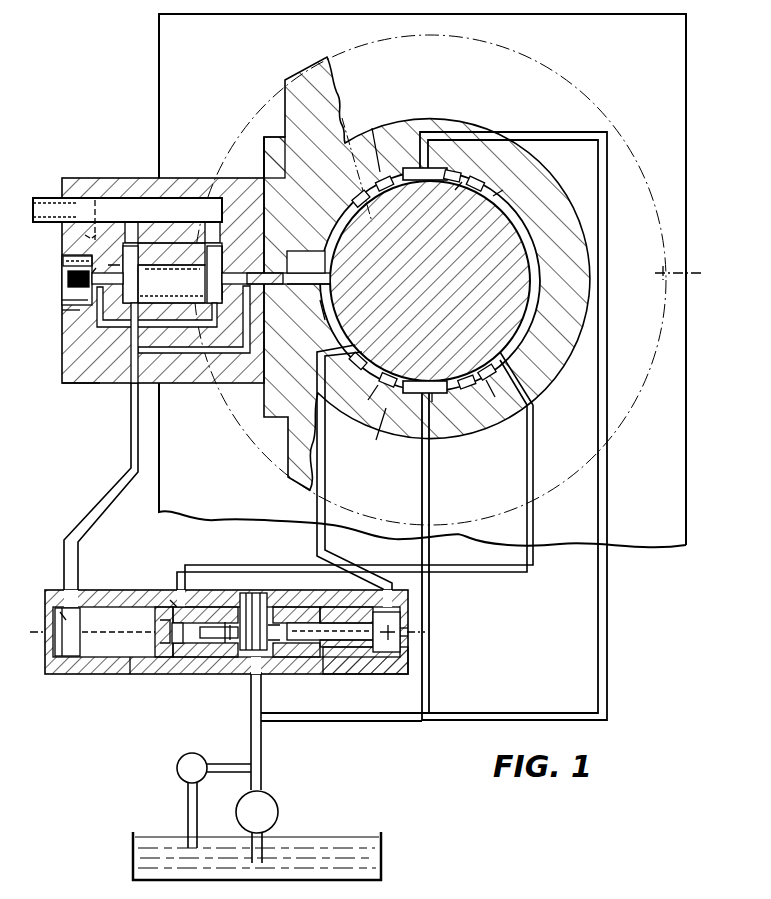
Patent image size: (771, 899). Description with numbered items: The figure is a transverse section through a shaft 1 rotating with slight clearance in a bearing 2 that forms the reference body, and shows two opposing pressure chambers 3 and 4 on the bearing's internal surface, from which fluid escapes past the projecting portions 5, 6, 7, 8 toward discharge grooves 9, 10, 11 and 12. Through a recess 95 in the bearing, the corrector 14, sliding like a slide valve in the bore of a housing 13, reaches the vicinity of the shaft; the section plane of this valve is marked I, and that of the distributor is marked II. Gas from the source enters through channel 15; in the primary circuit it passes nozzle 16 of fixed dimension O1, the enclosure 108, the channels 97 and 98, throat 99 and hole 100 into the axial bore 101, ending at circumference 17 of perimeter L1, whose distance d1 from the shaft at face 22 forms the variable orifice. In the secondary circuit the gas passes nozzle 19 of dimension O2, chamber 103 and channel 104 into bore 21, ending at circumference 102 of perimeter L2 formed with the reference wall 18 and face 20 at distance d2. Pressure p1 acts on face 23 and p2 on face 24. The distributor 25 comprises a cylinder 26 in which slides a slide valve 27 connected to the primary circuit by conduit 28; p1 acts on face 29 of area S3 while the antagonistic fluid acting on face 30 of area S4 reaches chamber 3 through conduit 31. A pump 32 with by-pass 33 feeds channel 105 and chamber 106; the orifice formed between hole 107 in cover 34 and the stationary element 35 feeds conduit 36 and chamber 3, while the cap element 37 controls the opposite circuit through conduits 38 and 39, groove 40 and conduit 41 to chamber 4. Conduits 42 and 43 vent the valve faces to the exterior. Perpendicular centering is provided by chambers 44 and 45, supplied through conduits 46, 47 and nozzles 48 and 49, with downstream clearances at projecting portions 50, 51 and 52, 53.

The shaft 1 is at (441, 254).
The bearing 2 is at (300, 478).
The chamber 3 is at (361, 373).
The chamber 4 is at (533, 265).
The projecting portion 5 is at (362, 189).
The projecting portion 6 is at (368, 400).
The projecting portion 7 is at (503, 185).
The projecting portion 8 is at (487, 372).
The discharge groove 9 is at (373, 141).
The discharge groove 10 is at (458, 192).
The discharge groove 11 is at (498, 398).
The discharge groove 12 is at (373, 436).
The housing 13 is at (240, 200).
The corrector 14 is at (172, 273).
The channel 15 is at (56, 216).
The nozzle 16 is at (134, 197).
The circumference 17 is at (326, 262).
The reference wall 18 is at (64, 262).
The nozzle 19 is at (213, 221).
The face of the corrector 20 is at (108, 290).
The bore 21 is at (122, 268).
The face of the corrector 22 is at (325, 280).
The face of the corrector 23 is at (172, 275).
The face of the corrector 24 is at (238, 258).
The distributor 25 is at (48, 675).
The cylinder 26 is at (182, 673).
The slide valve 27 is at (118, 623).
The conduit 28 is at (97, 507).
The face of slide valve 29 is at (72, 634).
The face of slide valve 30 is at (392, 660).
The conduit 31 is at (320, 552).
The pump 32 is at (278, 813).
The by-pass 33 is at (177, 771).
The cover 34 is at (300, 661).
The stationary element 35 is at (270, 663).
The conduit 36 is at (360, 646).
The cap element 37 is at (235, 666).
The conduit 38 is at (220, 668).
The conduit 39 is at (168, 668).
The groove 40 is at (172, 601).
The conduit 41 is at (227, 567).
The conduit 42 is at (131, 675).
The conduit 43 is at (330, 675).
The chamber 44 is at (429, 372).
The chamber 45 is at (458, 178).
The conduit 46 is at (428, 632).
The conduit 47 is at (600, 606).
The nozzle 48 is at (433, 403).
The nozzle 49 is at (433, 166).
The projecting portion 50 is at (391, 392).
The projecting portion 51 is at (466, 392).
The projecting portion 52 is at (386, 176).
The projecting portion 53 is at (482, 184).
The recess 95 is at (263, 178).
The channel 97 is at (132, 384).
The passage 98 is at (215, 354).
The throat 99 is at (247, 354).
The hole 100 is at (270, 188).
The bore 101 is at (318, 248).
The circumference 102 is at (68, 280).
The chamber 103 is at (185, 328).
The channel 104 is at (80, 384).
The channel 105 is at (250, 726).
The chamber 106 is at (272, 722).
The hole 107 is at (253, 592).
The enclosure 108 is at (78, 330).
The section line I is at (370, 287).
The section line II is at (224, 622).
The distance d1 is at (348, 170).
The distance d2 is at (95, 199).
The fixed dimension of nozzle O1 is at (130, 236).
The fixed dimension of nozzle O2 is at (210, 236).
The perimeter L1 is at (330, 325).
The perimeter L2 is at (80, 300).
The area of face S3 is at (60, 612).
The area of face S4 is at (405, 634).